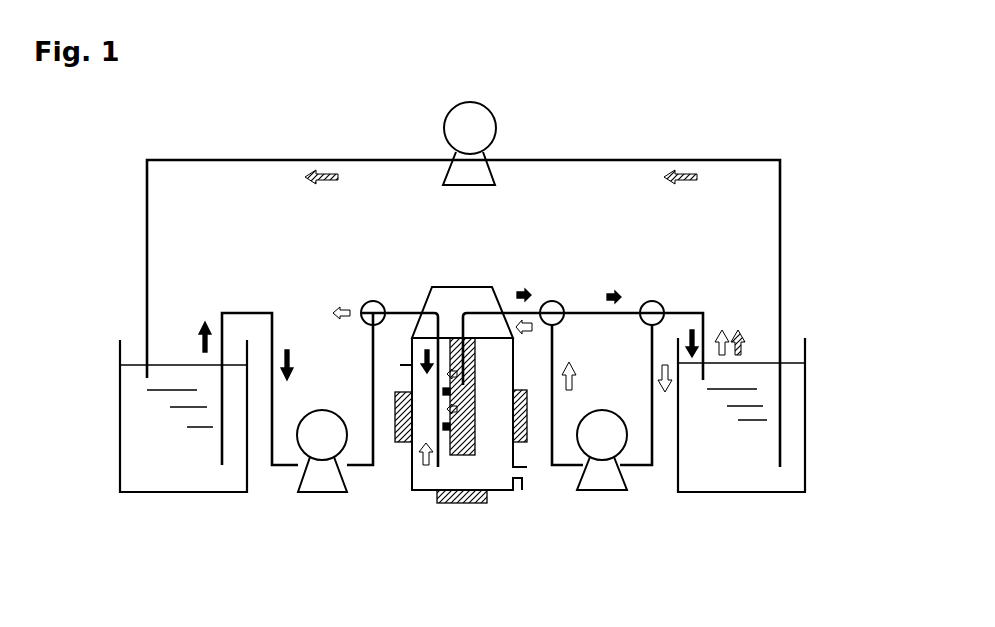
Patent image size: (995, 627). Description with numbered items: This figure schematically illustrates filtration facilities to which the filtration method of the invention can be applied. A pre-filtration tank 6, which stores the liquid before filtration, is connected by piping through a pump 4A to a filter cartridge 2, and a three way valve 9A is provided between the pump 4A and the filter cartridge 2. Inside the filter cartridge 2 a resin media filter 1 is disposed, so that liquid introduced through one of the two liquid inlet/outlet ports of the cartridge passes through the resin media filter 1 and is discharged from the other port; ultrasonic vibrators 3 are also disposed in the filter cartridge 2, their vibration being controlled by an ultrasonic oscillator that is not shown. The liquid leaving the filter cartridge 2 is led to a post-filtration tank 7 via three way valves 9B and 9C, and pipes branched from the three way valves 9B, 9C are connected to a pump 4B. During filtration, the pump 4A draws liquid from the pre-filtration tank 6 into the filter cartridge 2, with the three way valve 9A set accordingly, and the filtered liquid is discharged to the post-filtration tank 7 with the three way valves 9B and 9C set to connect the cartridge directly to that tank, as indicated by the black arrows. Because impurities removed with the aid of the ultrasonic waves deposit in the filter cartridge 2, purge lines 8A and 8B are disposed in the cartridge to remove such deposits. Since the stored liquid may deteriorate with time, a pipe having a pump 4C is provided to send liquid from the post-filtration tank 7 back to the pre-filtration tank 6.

The resin media filter 1 is at (476, 452).
The filter cartridge 2 is at (476, 296).
The ultrasonic vibrators 3 is at (398, 442).
The pump 4A is at (307, 478).
The pump 4B is at (608, 482).
The pump 4C is at (478, 127).
The pre-filtration tank 6 is at (130, 468).
The post-filtration tank 7 is at (792, 472).
The purge line 8A is at (402, 352).
The purge line 8B is at (522, 473).
The three way valve 9A is at (363, 305).
The three way valve 9B is at (560, 303).
The three way valve 9C is at (660, 303).